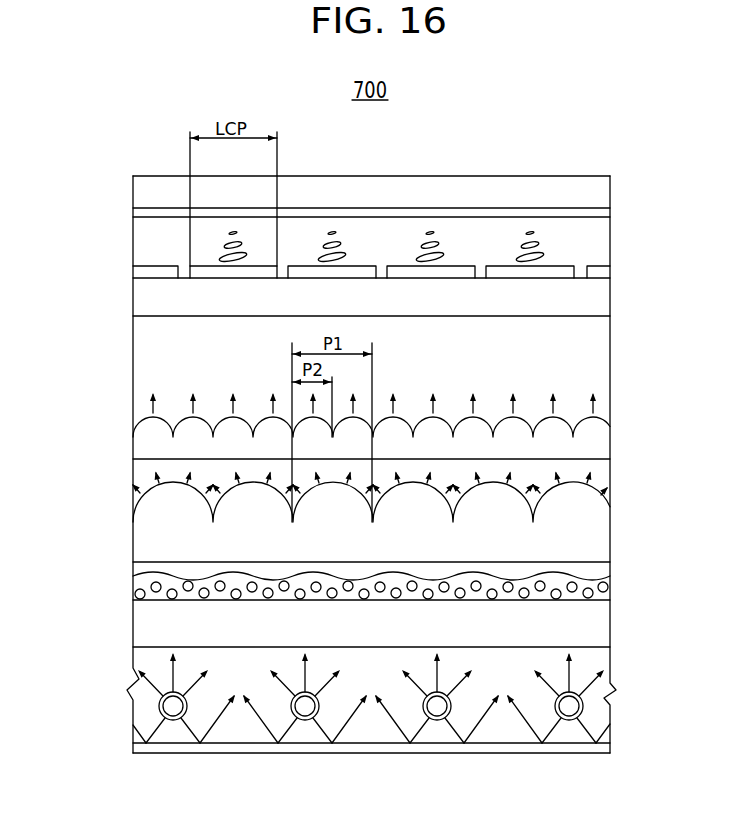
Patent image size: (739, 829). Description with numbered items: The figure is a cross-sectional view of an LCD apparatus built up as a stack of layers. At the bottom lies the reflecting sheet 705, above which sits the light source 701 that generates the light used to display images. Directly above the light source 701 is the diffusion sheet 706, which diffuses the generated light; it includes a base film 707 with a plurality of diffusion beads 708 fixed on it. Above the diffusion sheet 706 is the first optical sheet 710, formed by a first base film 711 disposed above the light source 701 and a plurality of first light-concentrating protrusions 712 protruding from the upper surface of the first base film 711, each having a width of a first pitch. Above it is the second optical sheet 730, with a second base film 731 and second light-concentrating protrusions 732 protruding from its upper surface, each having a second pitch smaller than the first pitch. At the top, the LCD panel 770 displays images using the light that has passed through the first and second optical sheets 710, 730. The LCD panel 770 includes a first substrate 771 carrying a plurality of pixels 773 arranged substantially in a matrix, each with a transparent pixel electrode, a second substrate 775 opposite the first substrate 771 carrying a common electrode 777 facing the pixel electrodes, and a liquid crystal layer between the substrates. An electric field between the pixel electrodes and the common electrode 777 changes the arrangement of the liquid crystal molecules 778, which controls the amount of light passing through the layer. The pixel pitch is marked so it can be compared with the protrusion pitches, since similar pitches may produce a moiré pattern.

The LCD panel 770 is at (345, 245).
The second substrate 775 is at (150, 190).
The common electrode 777 is at (590, 214).
The liquid crystal molecules 778 is at (548, 238).
The pixels 773 is at (590, 270).
The first substrate 771 is at (338, 296).
The second optical sheet 730 is at (431, 436).
The second light-concentrating protrusions 732 is at (590, 430).
The second base film 731 is at (590, 452).
The first optical sheet 710 is at (429, 516).
The first light-concentrating protrusions 712 is at (590, 507).
The first base film 711 is at (590, 545).
The diffusion sheet 706 is at (432, 609).
The diffusion beads 708 is at (598, 590).
The base film 707 is at (598, 627).
The light source 701 is at (583, 705).
The reflecting sheet 705 is at (598, 751).